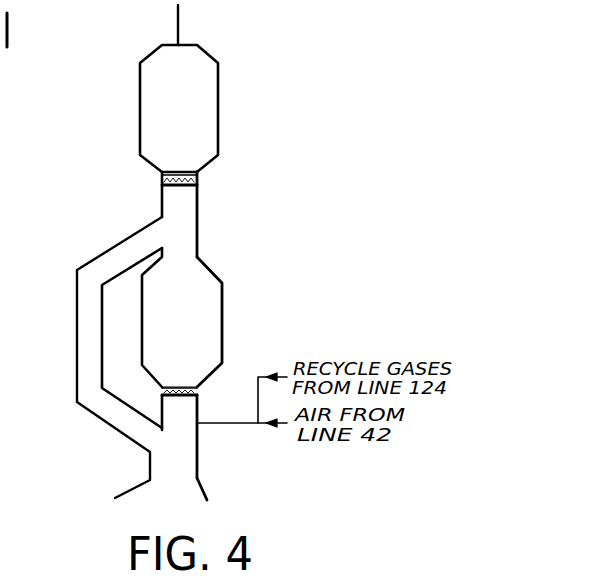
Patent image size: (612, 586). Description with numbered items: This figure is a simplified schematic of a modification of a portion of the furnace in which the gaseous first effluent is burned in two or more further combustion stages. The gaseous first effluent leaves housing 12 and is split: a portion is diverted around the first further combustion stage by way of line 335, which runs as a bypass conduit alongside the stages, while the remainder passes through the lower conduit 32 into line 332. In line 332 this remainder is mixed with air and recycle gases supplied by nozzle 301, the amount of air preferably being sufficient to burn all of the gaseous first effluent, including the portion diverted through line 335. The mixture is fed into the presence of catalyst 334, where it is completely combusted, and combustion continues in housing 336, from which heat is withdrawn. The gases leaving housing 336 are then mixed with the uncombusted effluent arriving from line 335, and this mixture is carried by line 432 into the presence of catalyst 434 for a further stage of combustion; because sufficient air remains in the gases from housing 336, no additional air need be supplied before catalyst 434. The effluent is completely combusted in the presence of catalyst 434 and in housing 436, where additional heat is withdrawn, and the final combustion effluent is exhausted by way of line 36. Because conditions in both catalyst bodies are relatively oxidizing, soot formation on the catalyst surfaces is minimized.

The exhaust line 36 is at (178, 21).
The housing 436 is at (218, 112).
The catalyst 434 is at (197, 182).
The line 432 is at (197, 225).
The housing 336 is at (222, 298).
The line 335 is at (77, 343).
The catalyst 334 is at (163, 392).
The line 332 is at (206, 383).
The nozzle 301 is at (182, 416).
The lower conduit 32 is at (197, 448).
The housing 12 is at (205, 490).